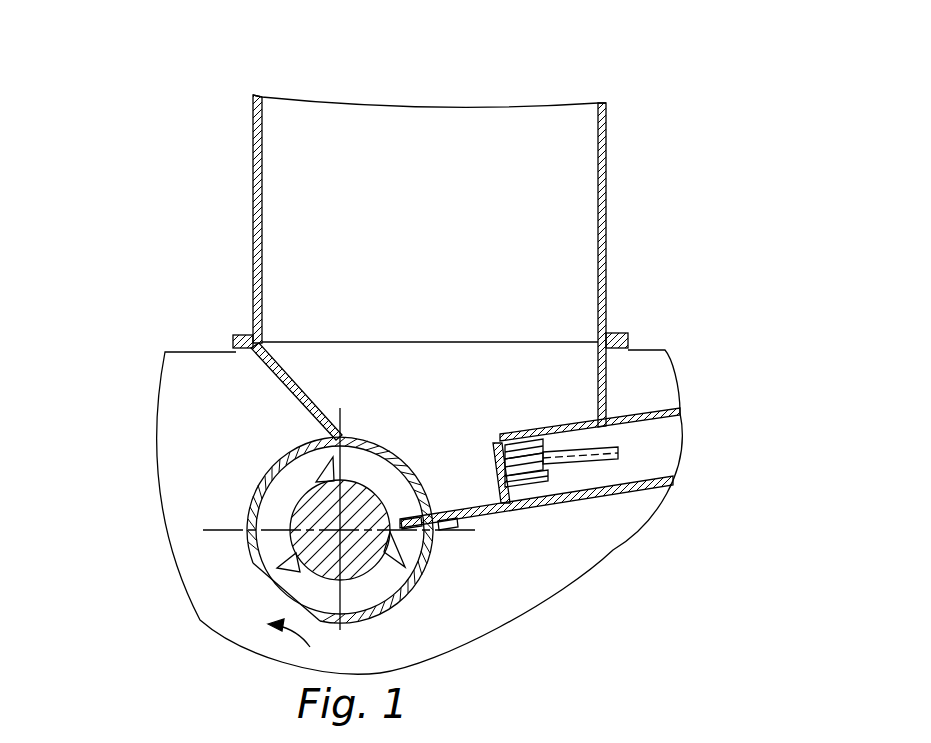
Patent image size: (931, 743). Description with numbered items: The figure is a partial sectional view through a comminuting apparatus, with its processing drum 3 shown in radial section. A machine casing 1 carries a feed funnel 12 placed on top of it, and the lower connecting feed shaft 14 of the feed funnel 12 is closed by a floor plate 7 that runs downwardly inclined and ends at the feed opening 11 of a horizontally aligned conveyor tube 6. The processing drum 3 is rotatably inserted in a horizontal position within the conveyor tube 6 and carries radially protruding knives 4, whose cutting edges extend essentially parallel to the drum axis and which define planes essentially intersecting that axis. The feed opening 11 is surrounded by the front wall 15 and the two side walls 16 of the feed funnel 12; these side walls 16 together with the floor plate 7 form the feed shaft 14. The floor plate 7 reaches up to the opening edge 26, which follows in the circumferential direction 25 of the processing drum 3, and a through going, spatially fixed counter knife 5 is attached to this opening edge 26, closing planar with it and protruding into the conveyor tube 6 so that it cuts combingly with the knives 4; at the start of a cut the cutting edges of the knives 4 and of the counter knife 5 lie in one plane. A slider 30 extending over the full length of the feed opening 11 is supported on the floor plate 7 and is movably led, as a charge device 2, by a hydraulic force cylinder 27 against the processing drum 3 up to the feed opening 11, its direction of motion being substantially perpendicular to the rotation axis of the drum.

The machine casing 1 is at (607, 393).
The charge device 2 is at (665, 443).
The processing drum 3 is at (360, 520).
The knives 4 is at (330, 467).
The counter knife 5 is at (423, 523).
The conveyor tube 6 is at (256, 572).
The floor plate 7 is at (563, 503).
The feed opening 11 is at (378, 456).
The feed funnel 12 is at (258, 190).
The feed shaft 14 is at (275, 380).
The front wall 15 is at (263, 237).
The side walls 16 is at (337, 363).
The circumferential direction 25 is at (310, 648).
The opening edge 26 is at (430, 520).
The hydraulic force cylinder 27 is at (600, 458).
The slider 30 is at (508, 441).